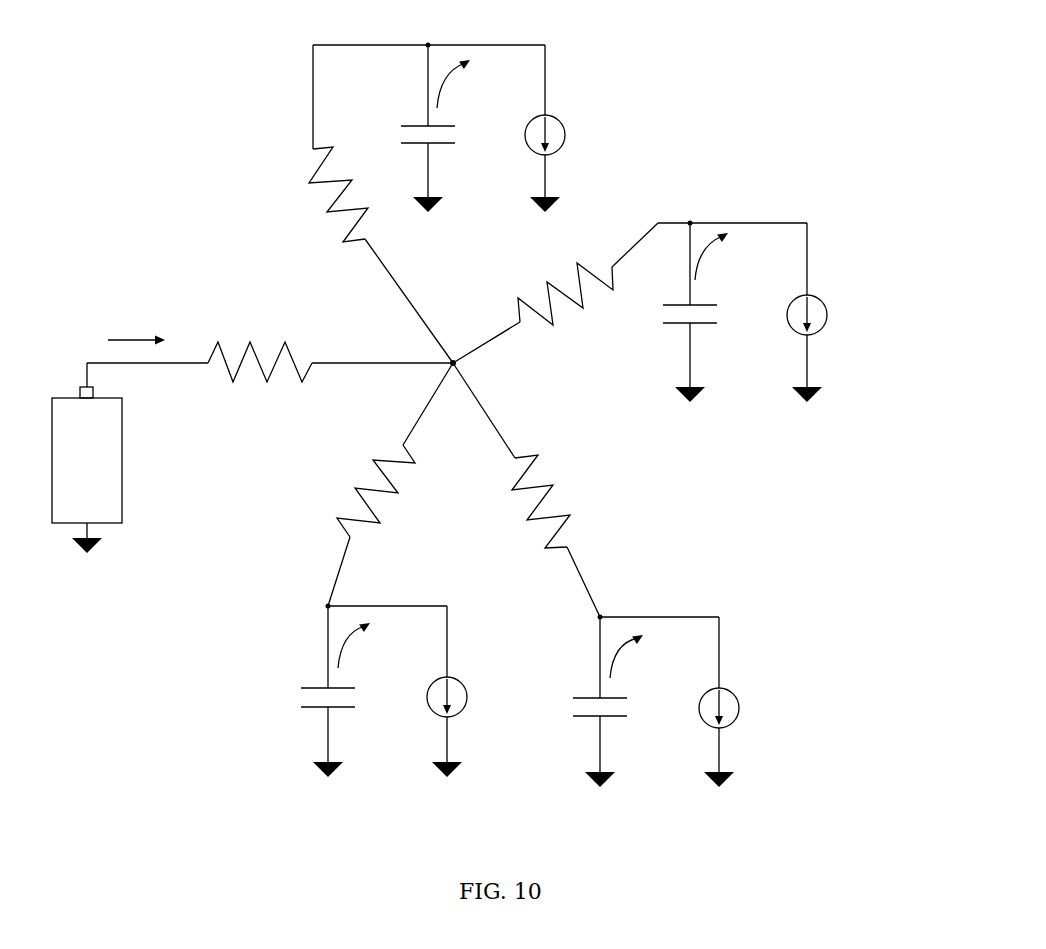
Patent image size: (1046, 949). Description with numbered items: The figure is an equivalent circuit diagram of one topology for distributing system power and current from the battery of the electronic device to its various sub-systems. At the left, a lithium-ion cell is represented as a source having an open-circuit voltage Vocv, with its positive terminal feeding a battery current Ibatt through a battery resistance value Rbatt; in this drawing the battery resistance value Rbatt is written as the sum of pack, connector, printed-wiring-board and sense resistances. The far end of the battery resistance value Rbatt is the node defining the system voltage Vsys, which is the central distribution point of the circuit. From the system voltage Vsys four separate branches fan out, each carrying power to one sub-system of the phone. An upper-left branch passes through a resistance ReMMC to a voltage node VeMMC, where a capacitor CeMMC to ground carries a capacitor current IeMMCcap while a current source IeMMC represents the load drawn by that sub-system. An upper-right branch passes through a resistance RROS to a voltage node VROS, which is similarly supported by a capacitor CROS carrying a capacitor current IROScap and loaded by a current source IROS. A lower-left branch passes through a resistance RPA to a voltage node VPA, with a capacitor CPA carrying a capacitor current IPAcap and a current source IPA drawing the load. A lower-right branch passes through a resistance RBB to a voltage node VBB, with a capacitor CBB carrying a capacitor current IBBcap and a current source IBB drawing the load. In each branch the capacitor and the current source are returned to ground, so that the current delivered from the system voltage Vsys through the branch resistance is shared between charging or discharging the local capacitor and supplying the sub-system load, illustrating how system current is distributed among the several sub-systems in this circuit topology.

The open-circuit voltage Vocv is at (120, 454).
The battery current Ibatt is at (136, 328).
The battery resistance value Rbatt is at (302, 383).
The system voltage Vsys is at (417, 347).
The eMMC path resistance ReMMC is at (349, 204).
The eMMC supply voltage node VeMMC is at (429, 31).
The eMMC decoupling capacitor CeMMC is at (456, 128).
The eMMC capacitor current IeMMCcap is at (483, 82).
The eMMC load current source IeMMC is at (576, 128).
The ROS path resistance RROS is at (555, 293).
The ROS supply voltage node VROS is at (732, 203).
The ROS decoupling capacitor CROS is at (716, 312).
The ROS capacitor current IROScap is at (739, 254).
The ROS load current source IROS is at (838, 312).
The PA path resistance RPA is at (390, 484).
The PA supply voltage node VPA is at (387, 592).
The PA decoupling capacitor CPA is at (352, 691).
The PA capacitor current IPAcap is at (379, 643).
The PA load current source IPA is at (470, 691).
The BB path resistance RBB is at (534, 490).
The BB supply voltage node VBB is at (659, 600).
The BB decoupling capacitor CBB is at (623, 702).
The BB capacitor current IBBcap is at (650, 654).
The BB load current source IBB is at (744, 702).